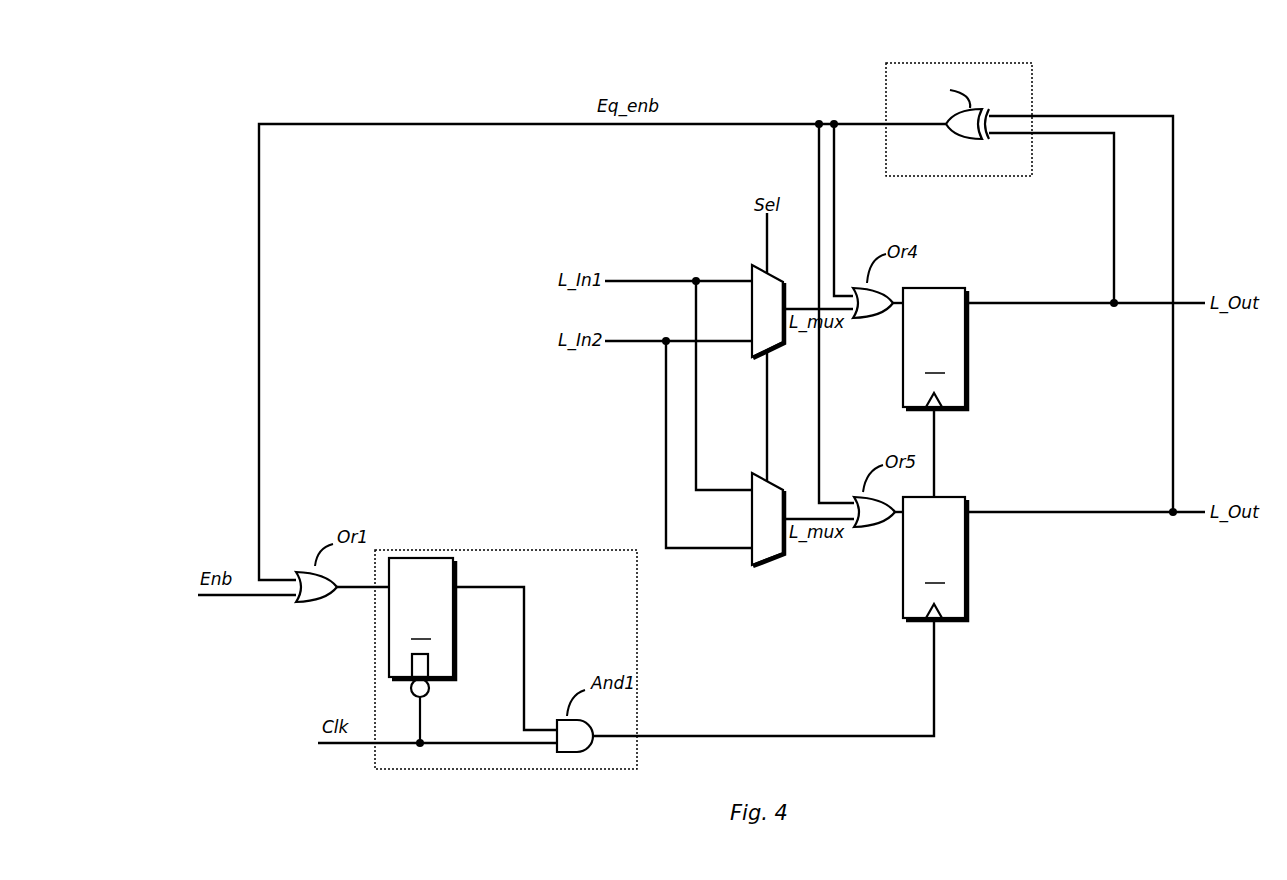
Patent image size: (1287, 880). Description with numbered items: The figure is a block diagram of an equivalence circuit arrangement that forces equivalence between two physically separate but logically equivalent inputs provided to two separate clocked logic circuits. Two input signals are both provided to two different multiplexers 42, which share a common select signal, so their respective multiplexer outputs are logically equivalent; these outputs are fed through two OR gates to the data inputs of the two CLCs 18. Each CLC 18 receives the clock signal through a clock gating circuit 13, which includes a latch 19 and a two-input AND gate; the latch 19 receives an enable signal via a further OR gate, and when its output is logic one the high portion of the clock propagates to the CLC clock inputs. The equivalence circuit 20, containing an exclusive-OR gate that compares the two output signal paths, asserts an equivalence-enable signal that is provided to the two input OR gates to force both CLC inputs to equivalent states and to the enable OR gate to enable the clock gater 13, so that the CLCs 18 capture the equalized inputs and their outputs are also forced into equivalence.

The clock gating circuit 13 is at (506, 643).
The clocked logic circuit (CLC) 18 is at (935, 454).
The latch 19 is at (422, 650).
The equivalence circuit 20 is at (1032, 63).
The multiplexer 42 is at (752, 265).